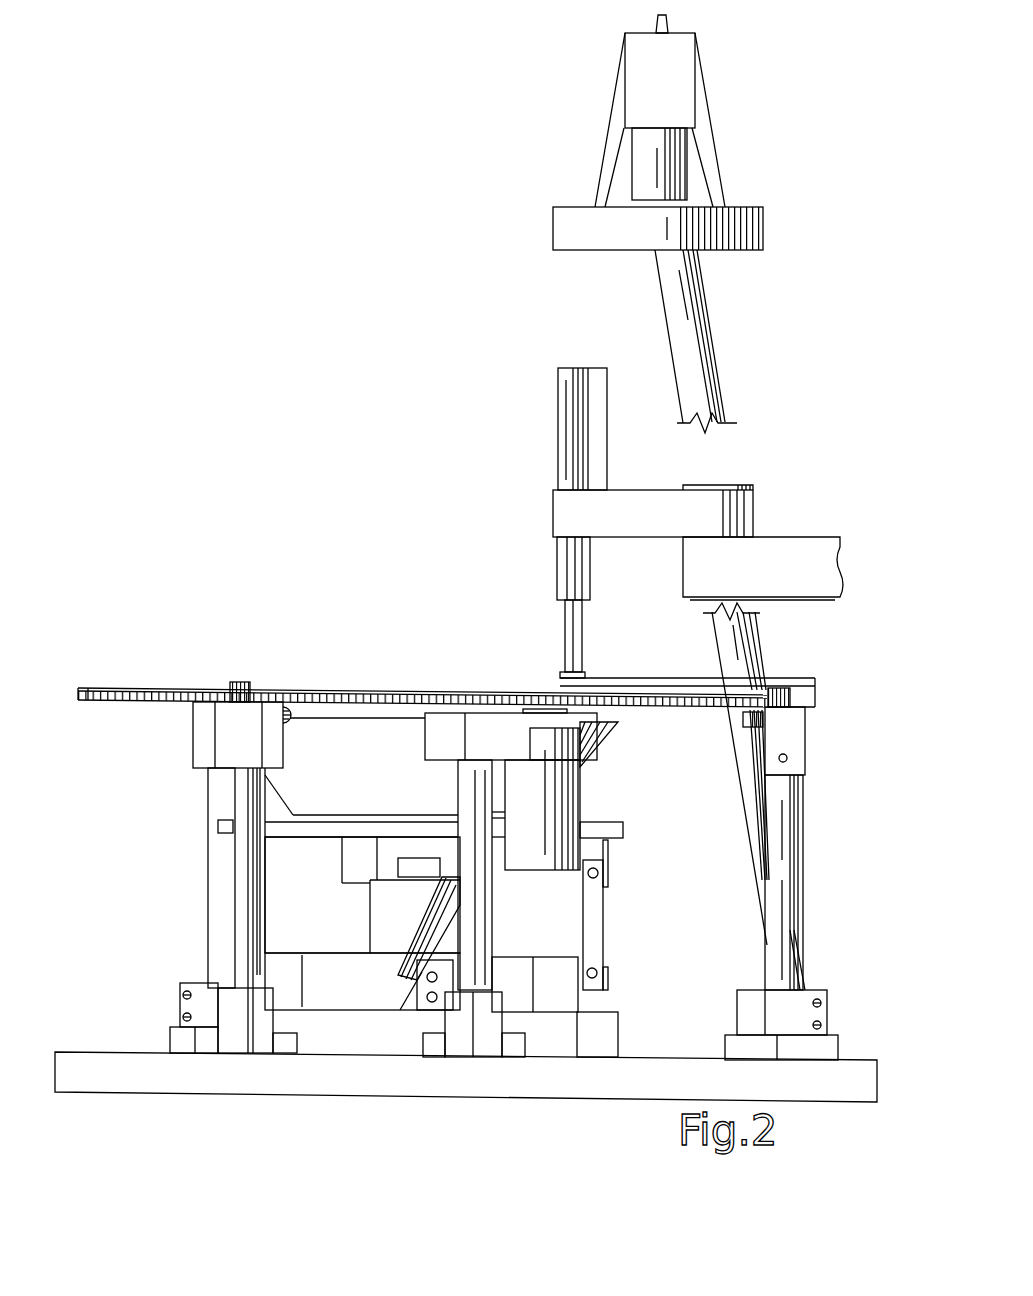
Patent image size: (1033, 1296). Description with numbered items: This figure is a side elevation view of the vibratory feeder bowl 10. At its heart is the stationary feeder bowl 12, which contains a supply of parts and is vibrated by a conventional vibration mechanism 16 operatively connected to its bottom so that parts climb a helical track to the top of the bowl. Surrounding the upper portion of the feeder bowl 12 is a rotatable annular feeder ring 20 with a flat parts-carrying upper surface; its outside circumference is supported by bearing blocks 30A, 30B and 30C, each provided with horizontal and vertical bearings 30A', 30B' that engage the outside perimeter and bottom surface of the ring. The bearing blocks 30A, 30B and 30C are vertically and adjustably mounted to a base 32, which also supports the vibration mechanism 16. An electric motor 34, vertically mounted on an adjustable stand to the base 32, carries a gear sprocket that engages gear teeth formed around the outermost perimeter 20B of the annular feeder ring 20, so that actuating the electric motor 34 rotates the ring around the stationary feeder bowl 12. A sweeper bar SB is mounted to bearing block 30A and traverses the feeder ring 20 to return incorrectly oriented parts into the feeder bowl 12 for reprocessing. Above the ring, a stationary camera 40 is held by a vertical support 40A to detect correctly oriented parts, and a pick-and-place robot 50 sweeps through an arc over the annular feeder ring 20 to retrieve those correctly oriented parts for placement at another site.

The vibratory feeder bowl 10 is at (222, 515).
The feeder bowl 12 is at (392, 680).
The vibration mechanism 16 is at (315, 912).
The annular feeder ring 20 is at (150, 688).
The outermost perimeter 20B is at (78, 697).
The bearing block 30A is at (799, 883).
The bearing 30A' is at (761, 705).
The bearing block 30B is at (275, 749).
The bearing 30B' is at (268, 649).
The bearing block 30C is at (205, 730).
The base 32 is at (622, 1090).
The electric motor 34 is at (563, 790).
The camera 40 is at (763, 230).
The vertical support 40A is at (712, 377).
The pick-and-place robot 50 is at (777, 527).
The sweeper bar SB is at (643, 686).